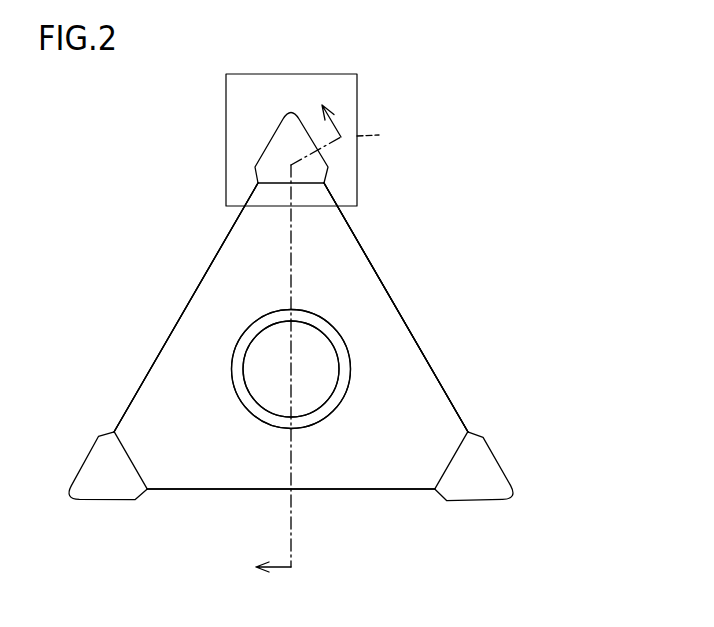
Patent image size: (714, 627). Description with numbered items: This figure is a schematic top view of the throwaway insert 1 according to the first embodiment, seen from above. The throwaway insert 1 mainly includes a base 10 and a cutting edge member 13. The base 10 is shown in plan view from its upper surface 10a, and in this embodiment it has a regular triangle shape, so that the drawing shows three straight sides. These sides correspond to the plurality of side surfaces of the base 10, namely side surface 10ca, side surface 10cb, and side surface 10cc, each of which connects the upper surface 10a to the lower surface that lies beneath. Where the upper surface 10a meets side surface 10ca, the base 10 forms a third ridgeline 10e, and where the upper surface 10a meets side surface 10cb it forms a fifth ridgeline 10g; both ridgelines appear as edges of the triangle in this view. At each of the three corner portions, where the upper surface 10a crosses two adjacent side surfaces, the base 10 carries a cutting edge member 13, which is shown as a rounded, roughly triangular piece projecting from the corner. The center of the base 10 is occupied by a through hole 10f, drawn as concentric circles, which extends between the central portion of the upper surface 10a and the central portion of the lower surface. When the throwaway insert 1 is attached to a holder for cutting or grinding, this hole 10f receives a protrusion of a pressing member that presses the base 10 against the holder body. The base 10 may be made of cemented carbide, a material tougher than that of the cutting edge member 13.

The throwaway insert 1 is at (556, 94).
The base 10 is at (193, 460).
The upper surface 10a is at (433, 424).
The third ridgeline 10e is at (433, 372).
The through hole 10f is at (325, 330).
The fifth ridgeline 10g is at (157, 358).
The side surface 10ca is at (410, 332).
The side surface 10cb is at (177, 324).
The side surface 10cc is at (330, 490).
The cutting edge member 13 is at (288, 144).